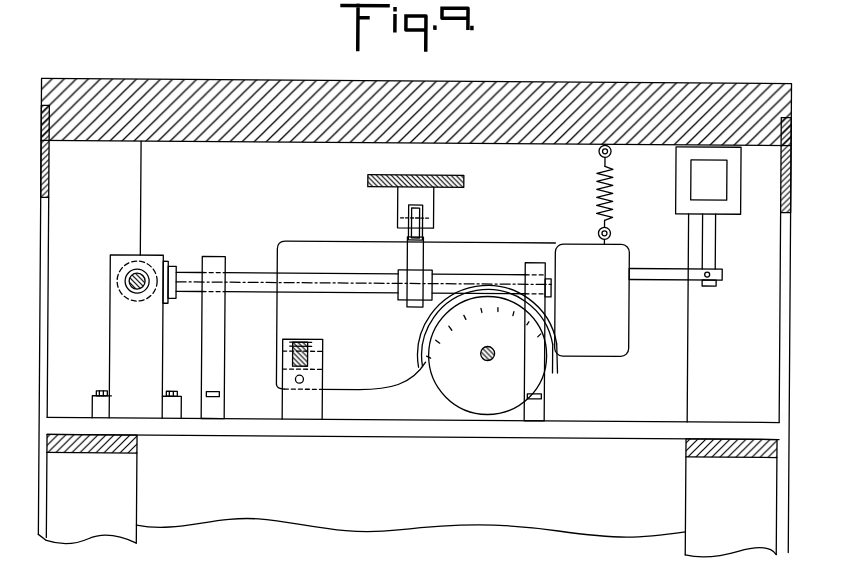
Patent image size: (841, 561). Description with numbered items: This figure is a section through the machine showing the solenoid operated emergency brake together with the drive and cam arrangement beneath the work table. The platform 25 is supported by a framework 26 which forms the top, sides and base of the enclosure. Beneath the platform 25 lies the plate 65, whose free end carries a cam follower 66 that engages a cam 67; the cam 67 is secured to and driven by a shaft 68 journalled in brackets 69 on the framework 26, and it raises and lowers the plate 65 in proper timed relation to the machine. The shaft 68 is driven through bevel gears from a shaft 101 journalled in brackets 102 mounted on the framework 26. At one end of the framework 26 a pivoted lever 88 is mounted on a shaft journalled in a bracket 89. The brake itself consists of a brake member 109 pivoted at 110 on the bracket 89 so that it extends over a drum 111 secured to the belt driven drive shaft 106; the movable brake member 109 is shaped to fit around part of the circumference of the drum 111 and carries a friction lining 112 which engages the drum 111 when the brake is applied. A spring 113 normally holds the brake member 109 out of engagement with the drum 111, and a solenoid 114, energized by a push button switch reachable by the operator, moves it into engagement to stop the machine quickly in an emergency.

The platform 25 is at (118, 92).
The framework 26 is at (126, 172).
The plate 65 is at (367, 182).
The cam follower 66 is at (408, 228).
The cam 67 is at (417, 262).
The shaft 68 is at (243, 282).
The brackets 69 is at (208, 258).
The pivoted lever 88 is at (300, 342).
The bracket 89 is at (290, 400).
The shaft 101 is at (137, 271).
The brackets 102 is at (124, 358).
The drive shaft 106 is at (481, 354).
The brake member 109 is at (388, 378).
The pivot 110 is at (305, 380).
The drum 111 is at (470, 390).
The friction lining 112 is at (556, 360).
The spring 113 is at (596, 200).
The solenoid 114 is at (682, 188).